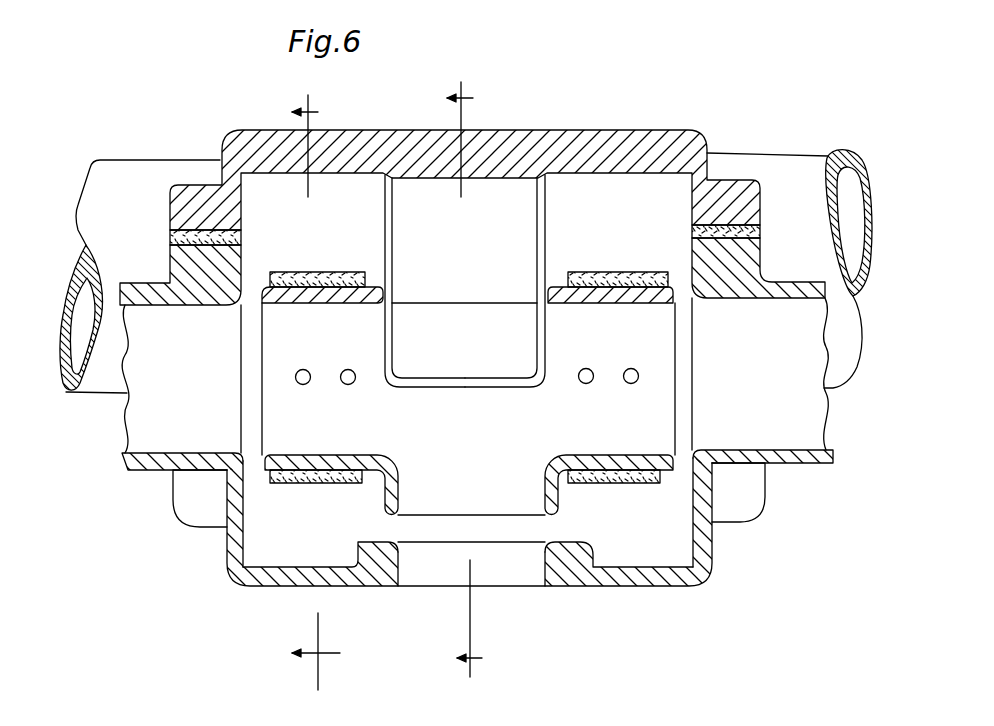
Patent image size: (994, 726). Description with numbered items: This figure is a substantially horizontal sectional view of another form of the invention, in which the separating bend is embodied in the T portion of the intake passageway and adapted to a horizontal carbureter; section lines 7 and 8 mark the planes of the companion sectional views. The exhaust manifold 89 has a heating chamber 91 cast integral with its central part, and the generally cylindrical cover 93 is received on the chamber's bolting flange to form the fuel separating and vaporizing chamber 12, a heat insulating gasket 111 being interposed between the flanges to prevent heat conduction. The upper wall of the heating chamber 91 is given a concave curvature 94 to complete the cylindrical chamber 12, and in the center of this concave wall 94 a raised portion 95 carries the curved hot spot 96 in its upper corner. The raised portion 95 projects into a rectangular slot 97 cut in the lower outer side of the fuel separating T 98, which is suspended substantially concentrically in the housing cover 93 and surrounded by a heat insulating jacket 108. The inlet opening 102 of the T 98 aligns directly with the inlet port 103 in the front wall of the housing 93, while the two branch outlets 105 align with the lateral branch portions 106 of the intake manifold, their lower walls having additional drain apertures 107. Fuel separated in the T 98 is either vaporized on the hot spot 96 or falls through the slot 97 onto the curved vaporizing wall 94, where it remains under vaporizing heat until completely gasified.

The section line VII-VII 7 is at (465, 379).
The section line VIII-VIII 8 is at (316, 393).
The fuel separating and vaporizing chamber 12 is at (287, 543).
The exhaust manifold 89 is at (788, 167).
The heating chamber 91 is at (747, 498).
The cover 93 is at (302, 577).
The concave wall 94 is at (571, 205).
The raised portion 95 is at (413, 223).
The hot spot 96 is at (420, 333).
The rectangular slot 97 is at (545, 337).
The fuel separating T 98 is at (338, 483).
The inlet opening 102 is at (445, 497).
The inlet port 103 is at (442, 567).
The branch outlets 105 is at (660, 345).
The lateral branch portions 106 is at (167, 433).
The drain apertures 107 is at (614, 400).
The heat insulating jacket 108 is at (817, 473).
The heat insulating gasket 111 is at (170, 238).